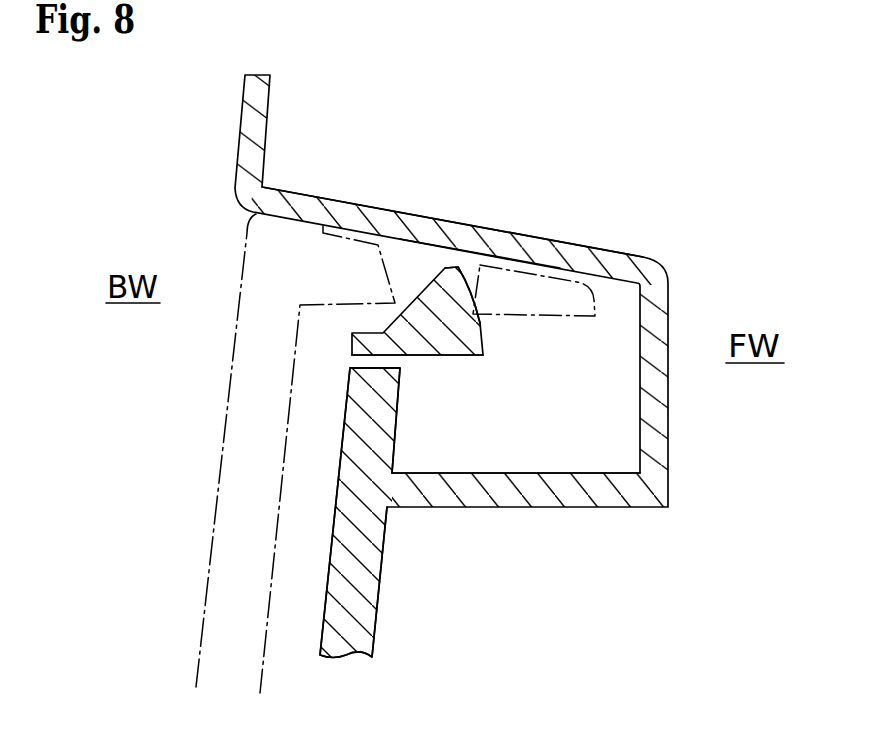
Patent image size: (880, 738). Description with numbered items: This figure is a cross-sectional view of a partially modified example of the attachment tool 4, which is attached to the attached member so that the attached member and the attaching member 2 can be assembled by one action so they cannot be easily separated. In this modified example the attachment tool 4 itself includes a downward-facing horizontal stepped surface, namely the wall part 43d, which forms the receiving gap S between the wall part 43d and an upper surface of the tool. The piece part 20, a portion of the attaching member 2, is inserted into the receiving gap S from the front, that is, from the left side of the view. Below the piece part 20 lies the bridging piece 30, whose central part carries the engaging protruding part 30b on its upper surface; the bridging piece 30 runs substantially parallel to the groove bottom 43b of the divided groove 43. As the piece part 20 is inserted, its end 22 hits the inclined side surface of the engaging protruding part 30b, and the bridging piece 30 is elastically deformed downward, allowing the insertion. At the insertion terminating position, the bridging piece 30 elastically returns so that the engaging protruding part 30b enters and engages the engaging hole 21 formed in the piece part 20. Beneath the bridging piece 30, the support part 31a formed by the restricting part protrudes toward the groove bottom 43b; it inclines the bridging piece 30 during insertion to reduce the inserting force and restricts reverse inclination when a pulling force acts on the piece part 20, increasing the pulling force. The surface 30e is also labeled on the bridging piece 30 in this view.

The attaching member 2 is at (237, 535).
The attachment tool 4 is at (358, 640).
The piece part 20 is at (345, 255).
The engaging hole 21 is at (418, 262).
The end 22 is at (593, 297).
The bridging piece 30 is at (352, 347).
The engaging protruding part 30b is at (470, 282).
The stopper bottom surface 30e is at (453, 357).
The support part 31a is at (353, 381).
The divided groove 43 is at (437, 428).
The groove bottom 43b is at (418, 473).
The wall part 43d is at (465, 272).
The receiving gap S is at (400, 262).